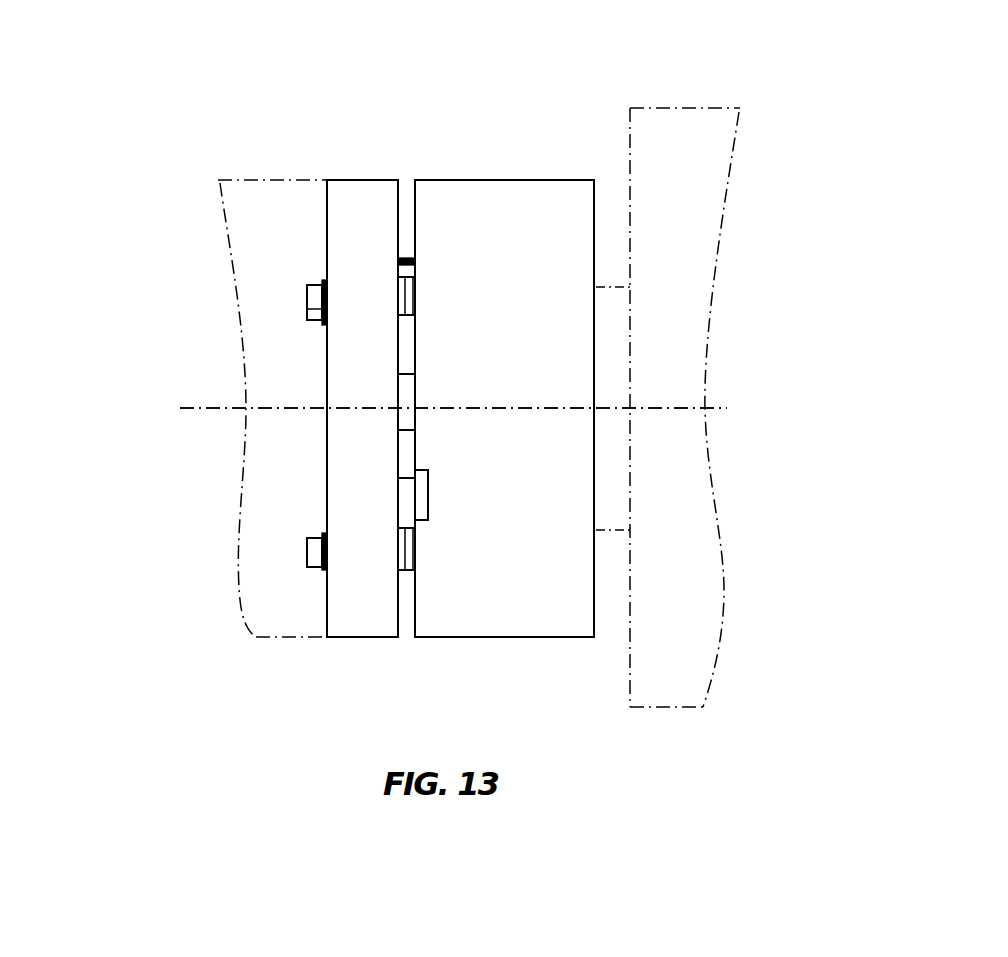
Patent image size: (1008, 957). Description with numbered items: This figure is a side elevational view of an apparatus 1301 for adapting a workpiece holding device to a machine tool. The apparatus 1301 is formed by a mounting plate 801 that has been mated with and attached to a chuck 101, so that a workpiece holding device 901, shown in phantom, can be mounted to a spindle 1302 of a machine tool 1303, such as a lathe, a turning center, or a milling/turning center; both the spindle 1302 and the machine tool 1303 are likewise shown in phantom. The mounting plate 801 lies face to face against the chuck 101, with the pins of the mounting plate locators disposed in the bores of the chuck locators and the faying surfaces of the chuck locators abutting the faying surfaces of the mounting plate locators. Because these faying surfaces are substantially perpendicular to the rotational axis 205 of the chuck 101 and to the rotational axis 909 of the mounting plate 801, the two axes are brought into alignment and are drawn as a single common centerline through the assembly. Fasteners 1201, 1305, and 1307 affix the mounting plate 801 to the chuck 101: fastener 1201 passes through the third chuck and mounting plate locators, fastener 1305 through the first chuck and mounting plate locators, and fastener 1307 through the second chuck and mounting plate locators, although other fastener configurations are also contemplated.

The chuck 101 is at (506, 638).
The mounting plate 801 is at (373, 183).
The workpiece holding device 901 is at (236, 232).
The fastener 1201 is at (307, 551).
The apparatus 1301 is at (527, 117).
The spindle 1302 is at (617, 463).
The machine tool 1303 is at (718, 168).
The fastener 1305 is at (307, 297).
The fastener 1307 is at (307, 316).
The rotational axis of chuck 205 is at (208, 409).
The rotational axis of mounting plate 909 is at (208, 409).